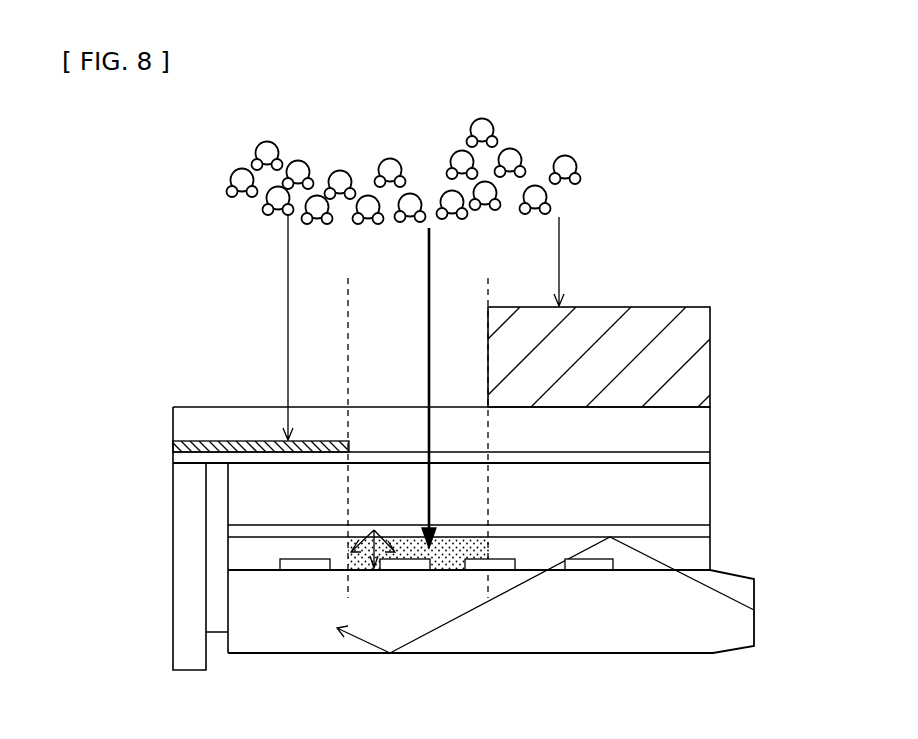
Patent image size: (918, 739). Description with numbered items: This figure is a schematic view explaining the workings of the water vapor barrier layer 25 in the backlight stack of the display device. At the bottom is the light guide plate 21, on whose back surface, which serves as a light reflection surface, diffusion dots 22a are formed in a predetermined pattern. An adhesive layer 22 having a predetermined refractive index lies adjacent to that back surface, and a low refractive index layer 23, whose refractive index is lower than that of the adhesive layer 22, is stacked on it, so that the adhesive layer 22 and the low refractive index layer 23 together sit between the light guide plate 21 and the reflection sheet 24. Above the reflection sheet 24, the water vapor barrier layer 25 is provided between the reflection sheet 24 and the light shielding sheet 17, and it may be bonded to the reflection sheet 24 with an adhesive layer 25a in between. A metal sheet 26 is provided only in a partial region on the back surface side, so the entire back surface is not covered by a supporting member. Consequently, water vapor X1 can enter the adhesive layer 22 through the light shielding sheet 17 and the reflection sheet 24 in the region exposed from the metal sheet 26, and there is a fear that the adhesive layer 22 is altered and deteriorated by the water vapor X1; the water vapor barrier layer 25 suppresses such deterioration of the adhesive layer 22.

The water vapor X1 is at (543, 138).
The metal sheet 26 is at (712, 354).
The light shielding sheet 17 is at (712, 432).
The water vapor barrier layer 25 is at (172, 446).
The adhesive layer 25a is at (712, 459).
The reflection sheet 24 is at (712, 494).
The low refractive index layer 23 is at (712, 531).
The adhesive layer 22 is at (257, 553).
The diffusion dots 22a is at (305, 565).
The light guide plate 21 is at (716, 673).